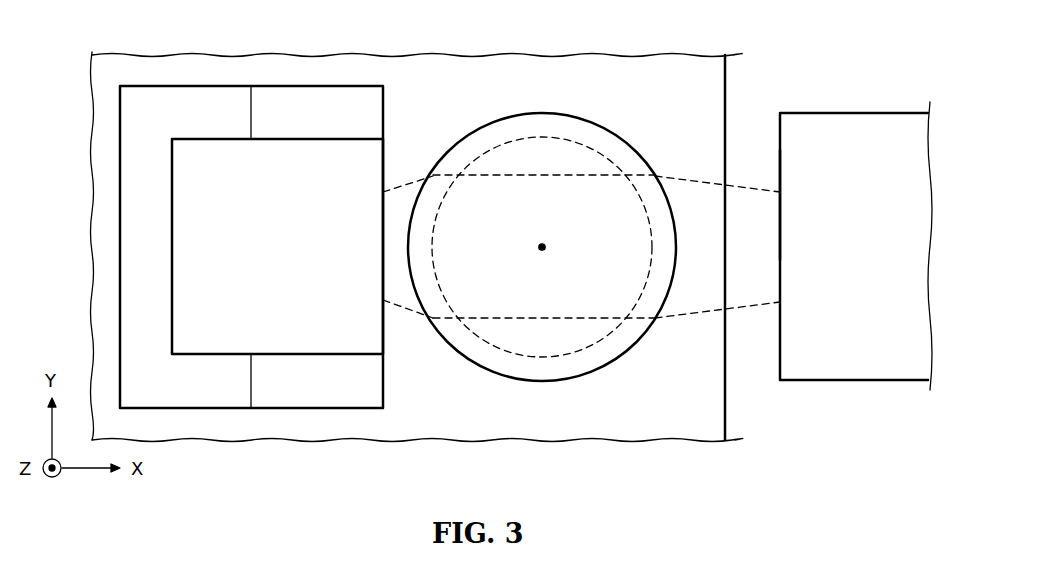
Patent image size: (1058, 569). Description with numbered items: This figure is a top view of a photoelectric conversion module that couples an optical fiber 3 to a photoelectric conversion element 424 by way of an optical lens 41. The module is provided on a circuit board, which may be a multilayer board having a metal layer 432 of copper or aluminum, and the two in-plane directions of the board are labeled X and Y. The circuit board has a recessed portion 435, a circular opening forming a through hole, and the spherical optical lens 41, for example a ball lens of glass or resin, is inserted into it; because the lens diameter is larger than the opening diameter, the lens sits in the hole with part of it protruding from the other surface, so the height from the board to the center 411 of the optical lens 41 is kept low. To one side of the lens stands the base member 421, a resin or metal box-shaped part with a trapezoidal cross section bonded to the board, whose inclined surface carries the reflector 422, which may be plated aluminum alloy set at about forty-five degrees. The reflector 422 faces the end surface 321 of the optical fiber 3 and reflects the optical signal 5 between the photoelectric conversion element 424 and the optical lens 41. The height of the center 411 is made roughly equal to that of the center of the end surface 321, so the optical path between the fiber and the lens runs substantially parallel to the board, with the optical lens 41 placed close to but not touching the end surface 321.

The optical fiber 3 is at (863, 113).
The optical signal 5 is at (756, 304).
The optical lens 41 is at (542, 113).
The end surface 321 is at (780, 238).
The center 411 is at (542, 247).
The base member 421 is at (120, 137).
The reflector 422 is at (303, 408).
The photoelectric conversion element 424 is at (303, 139).
The metal layer 432 is at (725, 88).
The recessed portion 435 is at (437, 228).